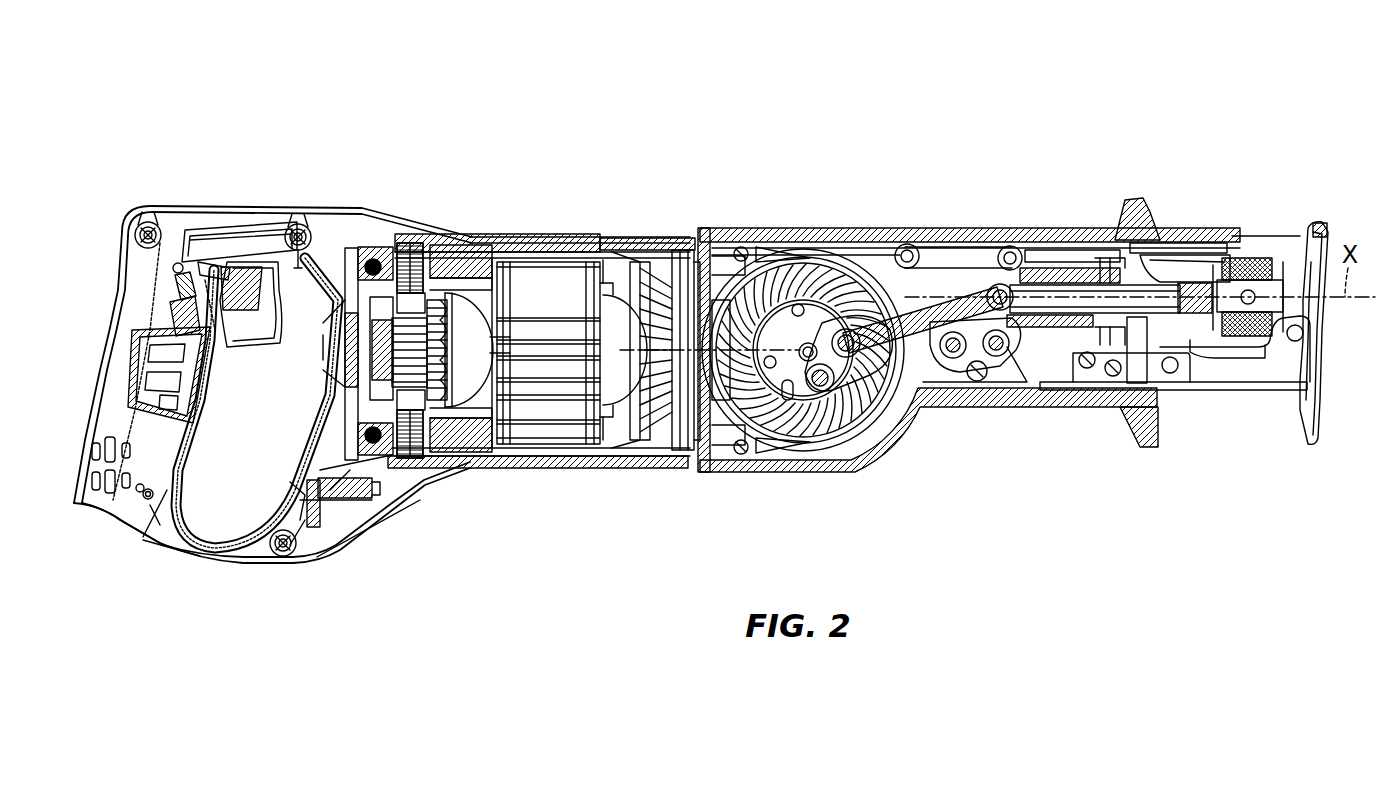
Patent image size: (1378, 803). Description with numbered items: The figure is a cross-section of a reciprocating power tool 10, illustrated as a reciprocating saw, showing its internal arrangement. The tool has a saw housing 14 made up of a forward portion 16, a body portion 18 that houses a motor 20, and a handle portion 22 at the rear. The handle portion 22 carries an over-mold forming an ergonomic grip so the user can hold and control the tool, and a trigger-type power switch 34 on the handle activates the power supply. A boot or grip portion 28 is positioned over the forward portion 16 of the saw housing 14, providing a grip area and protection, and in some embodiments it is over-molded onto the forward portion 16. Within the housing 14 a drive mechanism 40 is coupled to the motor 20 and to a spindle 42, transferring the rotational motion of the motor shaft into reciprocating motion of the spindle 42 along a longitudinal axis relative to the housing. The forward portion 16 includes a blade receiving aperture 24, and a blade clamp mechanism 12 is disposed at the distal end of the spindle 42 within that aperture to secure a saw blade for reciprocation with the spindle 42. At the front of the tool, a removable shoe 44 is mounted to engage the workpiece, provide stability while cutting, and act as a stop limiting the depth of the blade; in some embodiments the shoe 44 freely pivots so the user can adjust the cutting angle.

The reciprocating power tool 10 is at (984, 107).
The blade clamp mechanism 12 is at (1263, 262).
The saw housing 14 is at (596, 470).
The forward portion 16 is at (1058, 230).
The body portion 18 is at (547, 237).
The motor 20 is at (530, 418).
The handle portion 22 is at (356, 216).
The blade receiving aperture 24 is at (1240, 235).
The boot 28 is at (810, 473).
The trigger-type power switch 34 is at (270, 342).
The drive mechanism 40 is at (881, 258).
The spindle 42 is at (1162, 290).
The shoe 44 is at (1330, 403).